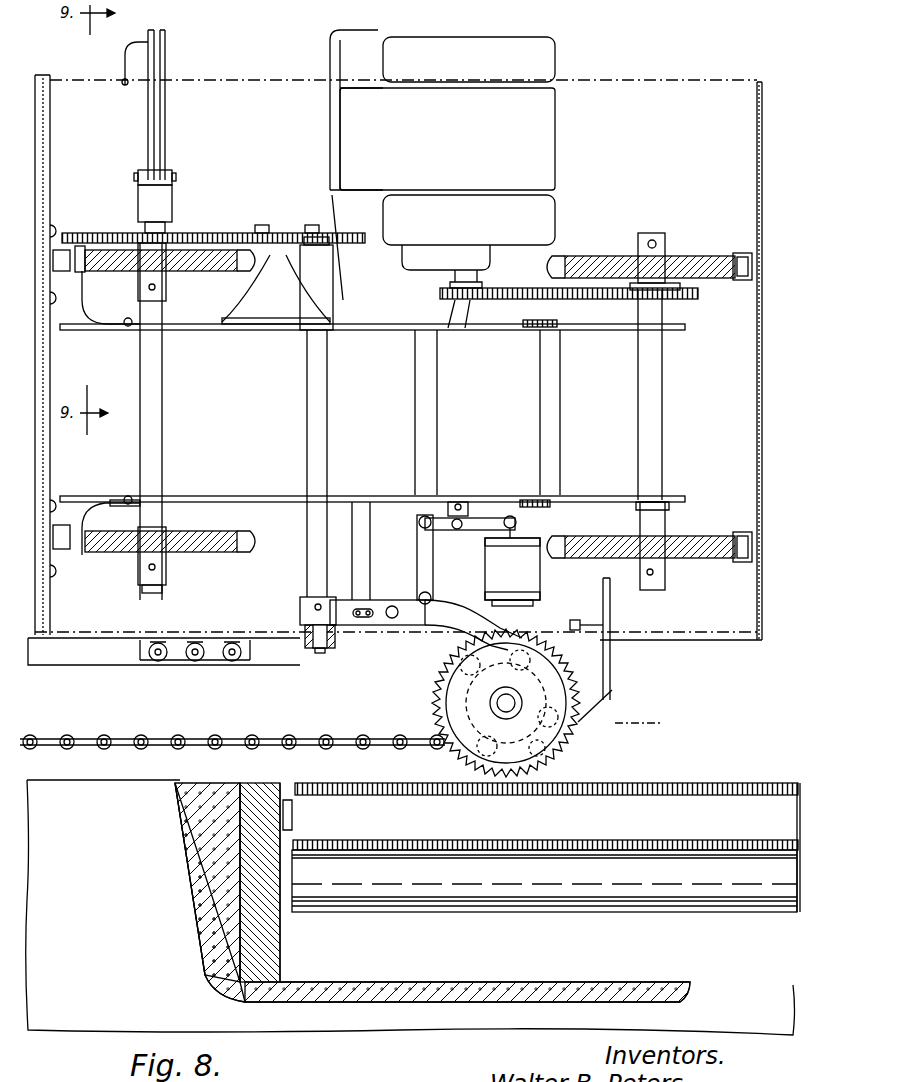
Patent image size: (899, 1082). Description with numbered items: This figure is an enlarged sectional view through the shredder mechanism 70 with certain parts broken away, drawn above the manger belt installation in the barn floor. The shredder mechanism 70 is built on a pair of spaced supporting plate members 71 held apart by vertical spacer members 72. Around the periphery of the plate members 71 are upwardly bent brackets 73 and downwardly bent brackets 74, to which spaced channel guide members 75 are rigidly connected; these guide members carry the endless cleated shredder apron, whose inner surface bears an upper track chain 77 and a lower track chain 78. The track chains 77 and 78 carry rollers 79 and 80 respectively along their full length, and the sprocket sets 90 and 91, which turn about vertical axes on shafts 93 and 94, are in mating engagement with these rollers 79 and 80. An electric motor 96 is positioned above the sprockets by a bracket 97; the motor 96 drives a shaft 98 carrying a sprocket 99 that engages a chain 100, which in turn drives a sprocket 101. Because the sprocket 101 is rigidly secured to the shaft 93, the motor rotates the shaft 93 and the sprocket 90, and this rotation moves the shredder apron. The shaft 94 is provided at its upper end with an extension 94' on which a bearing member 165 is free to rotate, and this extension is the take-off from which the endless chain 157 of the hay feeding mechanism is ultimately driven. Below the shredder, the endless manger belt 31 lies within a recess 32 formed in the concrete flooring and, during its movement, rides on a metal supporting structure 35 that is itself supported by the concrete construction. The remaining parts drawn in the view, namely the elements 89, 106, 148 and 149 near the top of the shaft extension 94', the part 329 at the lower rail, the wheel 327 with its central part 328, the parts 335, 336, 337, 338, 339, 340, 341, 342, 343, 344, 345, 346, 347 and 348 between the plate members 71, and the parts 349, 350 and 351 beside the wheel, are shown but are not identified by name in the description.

The manger belt 31 is at (628, 783).
The recess 32 is at (235, 947).
The metal supporting structure 35 is at (425, 912).
The shredder mechanism 70 is at (765, 182).
The supporting plate members 71 is at (478, 330).
The vertical spacer members 72 is at (270, 413).
The upwardly bent brackets 73 is at (292, 325).
The downwardly bent brackets 74 is at (110, 500).
The channel guide members 75 is at (80, 300).
The upper track chain 77 is at (62, 248).
The lower track chain 78 is at (60, 523).
The rollers 79 is at (80, 245).
The rollers 80 is at (62, 549).
The side plate 89 is at (52, 118).
The sprocket set 90 is at (695, 256).
The sprocket set 91 is at (218, 270).
The shaft 93 is at (655, 588).
The shaft 94 is at (163, 598).
The shaft extension 94' is at (184, 220).
The electric motor 96 is at (555, 213).
The bracket 97 is at (555, 135).
The shaft 98 is at (480, 282).
The sprocket 99 is at (468, 300).
The chain 100 is at (605, 303).
The sprocket 101 is at (668, 290).
The rod 106 is at (158, 175).
The bearing 148 is at (175, 178).
The hook 149 is at (124, 53).
The endless chain 157 is at (258, 225).
The bearing member 165 is at (172, 200).
The ratchet wheel 327 is at (580, 715).
The hub 328 is at (495, 706).
The roller 329 is at (200, 640).
The pin 335 is at (545, 750).
The pawl 336 is at (490, 620).
The lever 337 is at (378, 625).
The slot 338 is at (362, 608).
The pin 339 is at (372, 610).
The guide 340 is at (360, 537).
The rod 341 is at (327, 424).
The block 342 is at (333, 292).
The plunger 343 is at (322, 655).
The lug 344 is at (310, 225).
The chain 345 is at (125, 232).
The link 346 is at (425, 551).
The link 347 is at (460, 518).
The solenoid 348 is at (520, 556).
The arm 349 is at (612, 690).
The rod 350 is at (612, 640).
The stop 351 is at (575, 620).